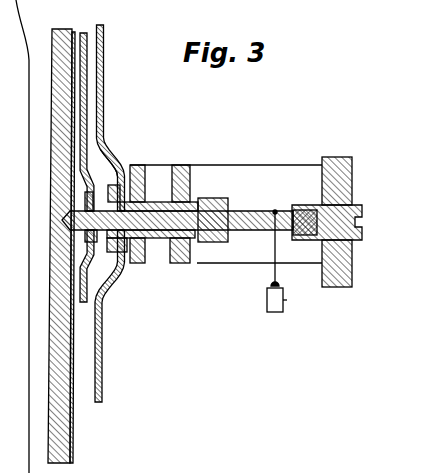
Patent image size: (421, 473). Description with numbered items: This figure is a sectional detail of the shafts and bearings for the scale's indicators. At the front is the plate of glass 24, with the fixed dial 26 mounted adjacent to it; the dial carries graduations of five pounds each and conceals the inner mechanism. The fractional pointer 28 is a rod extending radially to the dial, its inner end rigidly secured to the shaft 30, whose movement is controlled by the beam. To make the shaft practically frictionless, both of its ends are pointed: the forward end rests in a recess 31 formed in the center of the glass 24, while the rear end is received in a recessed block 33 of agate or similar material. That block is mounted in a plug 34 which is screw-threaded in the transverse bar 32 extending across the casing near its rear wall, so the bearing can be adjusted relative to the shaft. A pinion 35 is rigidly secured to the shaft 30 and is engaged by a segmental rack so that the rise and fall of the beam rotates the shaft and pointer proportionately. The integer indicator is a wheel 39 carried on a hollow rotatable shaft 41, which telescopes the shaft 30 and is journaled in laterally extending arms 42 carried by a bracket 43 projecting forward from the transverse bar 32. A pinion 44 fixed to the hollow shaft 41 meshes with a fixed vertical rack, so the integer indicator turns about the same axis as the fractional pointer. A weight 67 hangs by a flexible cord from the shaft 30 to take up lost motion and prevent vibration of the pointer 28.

The glass 24 is at (59, 30).
The dial 26 is at (76, 32).
The pointer 28 is at (86, 80).
The wheel 39 is at (102, 100).
The shaft 30 is at (104, 190).
The recess 31 is at (62, 220).
The laterally extending arms 42 is at (162, 172).
The bracket 43 is at (212, 170).
The pinion 44 is at (188, 197).
The hollow rotatable shaft 41 is at (160, 262).
The pinion 35 is at (219, 242).
The plug 34 is at (323, 205).
The recessed block 33 is at (303, 237).
The transverse bar 32 is at (337, 287).
The weight 67 is at (275, 308).